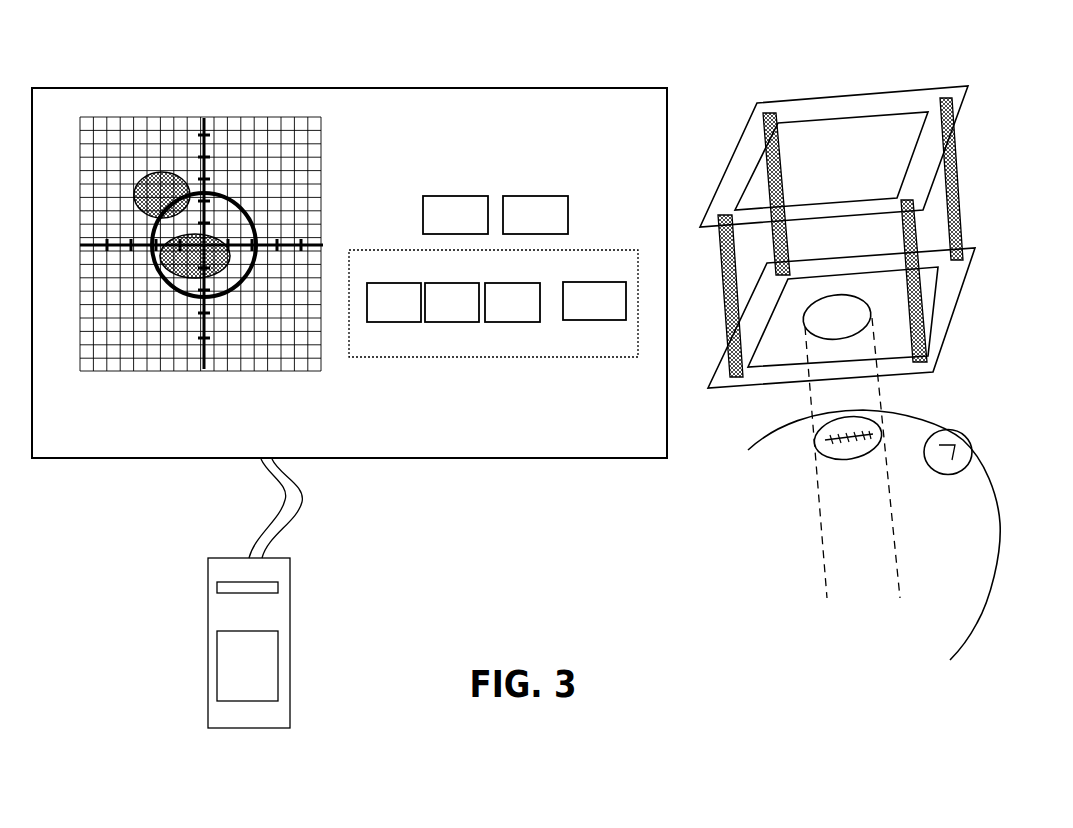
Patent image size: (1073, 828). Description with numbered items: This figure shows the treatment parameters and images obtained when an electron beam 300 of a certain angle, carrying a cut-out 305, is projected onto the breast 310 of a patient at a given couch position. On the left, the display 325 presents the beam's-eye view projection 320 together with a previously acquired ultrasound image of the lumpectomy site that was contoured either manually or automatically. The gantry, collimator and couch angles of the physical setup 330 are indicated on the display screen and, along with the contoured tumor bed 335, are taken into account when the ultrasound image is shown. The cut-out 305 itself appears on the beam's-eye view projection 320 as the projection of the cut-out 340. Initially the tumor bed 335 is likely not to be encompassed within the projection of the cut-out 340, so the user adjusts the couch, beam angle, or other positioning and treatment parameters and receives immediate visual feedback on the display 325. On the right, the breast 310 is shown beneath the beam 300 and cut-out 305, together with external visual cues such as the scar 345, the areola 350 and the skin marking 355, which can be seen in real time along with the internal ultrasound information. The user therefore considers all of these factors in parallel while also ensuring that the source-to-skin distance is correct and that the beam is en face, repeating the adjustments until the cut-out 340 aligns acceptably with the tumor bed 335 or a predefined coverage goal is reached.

The electron beam 300 is at (878, 398).
The cut-out 305 is at (875, 318).
The breast 310 is at (874, 535).
The beam's-eye view projection 320 is at (230, 112).
The display 325 is at (387, 88).
The physical setup 330 is at (509, 163).
The contoured tumor bed 335 is at (143, 175).
The projection of the cut-out 340 is at (168, 287).
The scar 345 is at (837, 440).
The areola 350 is at (960, 458).
The skin marking 355 is at (867, 450).